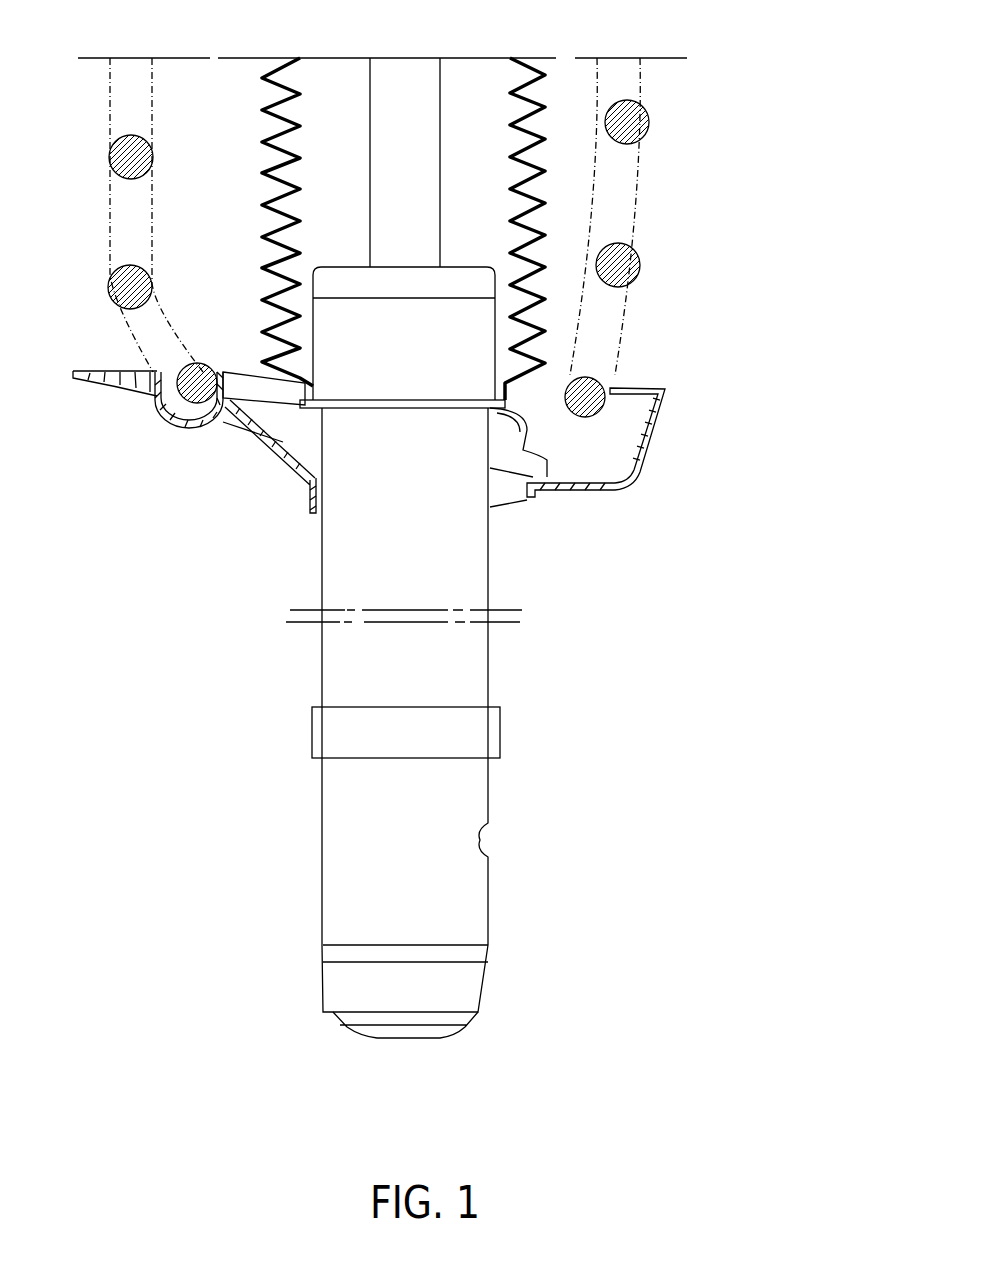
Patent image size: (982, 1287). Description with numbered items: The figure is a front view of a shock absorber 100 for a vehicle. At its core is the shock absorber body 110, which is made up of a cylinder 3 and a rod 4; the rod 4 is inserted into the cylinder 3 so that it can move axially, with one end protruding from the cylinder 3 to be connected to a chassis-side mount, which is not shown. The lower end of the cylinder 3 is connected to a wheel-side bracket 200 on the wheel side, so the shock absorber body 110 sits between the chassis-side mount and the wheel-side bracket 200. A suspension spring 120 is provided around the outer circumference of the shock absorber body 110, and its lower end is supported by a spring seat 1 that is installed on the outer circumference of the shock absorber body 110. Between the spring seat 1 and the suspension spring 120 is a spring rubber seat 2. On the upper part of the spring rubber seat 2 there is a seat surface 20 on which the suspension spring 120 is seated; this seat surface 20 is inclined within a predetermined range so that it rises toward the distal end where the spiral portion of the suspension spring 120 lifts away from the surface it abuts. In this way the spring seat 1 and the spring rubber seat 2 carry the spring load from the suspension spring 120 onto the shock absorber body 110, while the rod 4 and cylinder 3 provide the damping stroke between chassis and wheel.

The shock absorber 100 is at (690, 135).
The suspension spring 120 is at (622, 268).
The rod 4 is at (423, 173).
The seat surface 20 is at (167, 417).
The spring rubber seat 2 is at (207, 436).
The spring seat 1 is at (664, 433).
The cylinder 3 is at (475, 575).
The shock absorber body 110 is at (325, 648).
The wheel-side bracket 200 is at (335, 902).